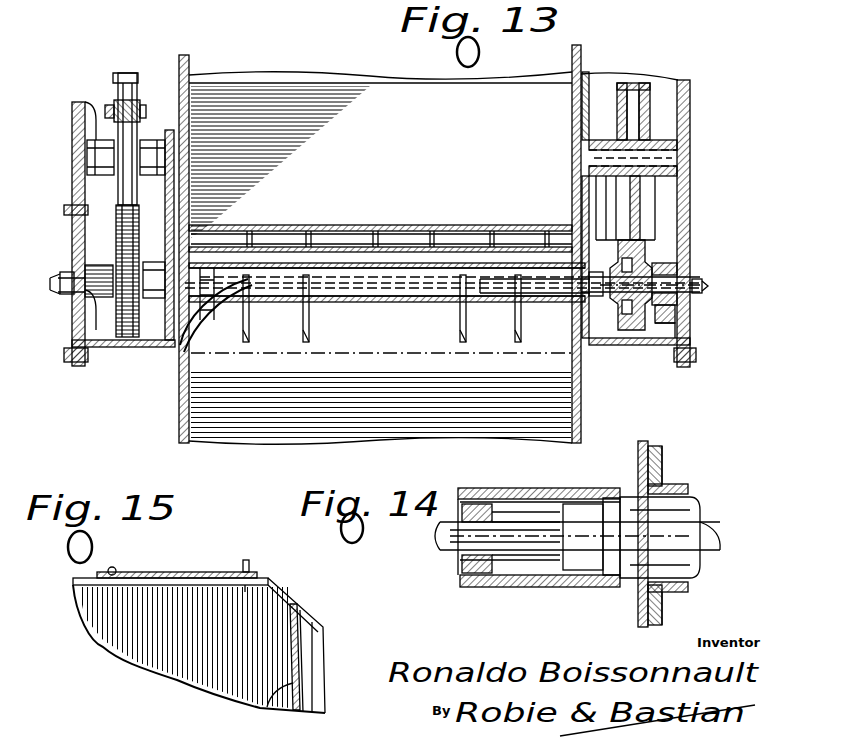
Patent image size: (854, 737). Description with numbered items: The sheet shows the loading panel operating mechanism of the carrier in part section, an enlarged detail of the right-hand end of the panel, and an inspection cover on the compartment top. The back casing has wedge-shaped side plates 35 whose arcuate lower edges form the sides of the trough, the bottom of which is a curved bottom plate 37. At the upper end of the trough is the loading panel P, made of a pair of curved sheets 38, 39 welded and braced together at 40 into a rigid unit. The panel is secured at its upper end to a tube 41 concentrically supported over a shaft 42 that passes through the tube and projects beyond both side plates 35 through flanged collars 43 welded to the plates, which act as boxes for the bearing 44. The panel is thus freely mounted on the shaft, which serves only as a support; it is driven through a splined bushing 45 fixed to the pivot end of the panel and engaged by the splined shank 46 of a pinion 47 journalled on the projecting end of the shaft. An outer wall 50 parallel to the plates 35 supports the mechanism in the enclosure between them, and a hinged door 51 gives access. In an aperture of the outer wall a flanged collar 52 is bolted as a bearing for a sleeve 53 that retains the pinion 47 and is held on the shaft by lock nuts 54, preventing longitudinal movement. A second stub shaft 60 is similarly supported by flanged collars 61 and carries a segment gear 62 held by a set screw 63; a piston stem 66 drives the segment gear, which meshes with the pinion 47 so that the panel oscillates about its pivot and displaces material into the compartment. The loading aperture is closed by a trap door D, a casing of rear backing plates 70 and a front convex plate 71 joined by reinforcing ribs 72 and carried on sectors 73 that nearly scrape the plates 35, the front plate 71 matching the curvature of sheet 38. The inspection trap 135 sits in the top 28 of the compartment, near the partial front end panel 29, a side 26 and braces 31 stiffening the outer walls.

In FIG. 13, the side plates 35 is at (182, 72).
In FIG. 14, the side plates 35 is at (644, 440).
In FIG. 13, the curved bottom plate 37 is at (255, 432).
In FIG. 13, the curved sheet 38 is at (216, 311).
In FIG. 13, the curved sheet 39 is at (250, 280).
In FIG. 14, the curved sheet 39 is at (465, 488).
In FIG. 13, the brace 40 is at (311, 322).
In FIG. 13, the tube 41 is at (420, 295).
In FIG. 14, the tube 41 is at (518, 488).
In FIG. 13, the shaft 42 is at (464, 300).
In FIG. 14, the shaft 42 is at (455, 552).
In FIG. 13, the flanged collars 43 is at (160, 242).
In FIG. 14, the flanged collars 43 is at (662, 452).
In FIG. 14, the bearing 44 is at (690, 486).
In FIG. 13, the splined bushing 45 is at (518, 300).
In FIG. 14, the splined bushing 45 is at (580, 504).
In FIG. 13, the splined shank 46 is at (606, 245).
In FIG. 14, the splined shank 46 is at (695, 510).
In FIG. 13, the pinion 47 is at (646, 275).
In FIG. 13, the outer wall 50 is at (82, 102).
In FIG. 13, the hinged door 51 is at (72, 180).
In FIG. 13, the flanged collar 52 is at (95, 268).
In FIG. 13, the sleeve 53 is at (690, 268).
In FIG. 13, the lock nuts 54 is at (60, 296).
In FIG. 13, the stub shaft 60 is at (589, 160).
In FIG. 13, the flanged collars 61 is at (87, 150).
In FIG. 13, the segment gear 62 is at (125, 172).
In FIG. 13, the set screw 63 is at (585, 116).
In FIG. 13, the piston stem 66 is at (108, 102).
In FIG. 13, the rear backing plates 70 is at (460, 232).
In FIG. 13, the front convex plate 71 is at (332, 232).
In FIG. 13, the reinforcing ribs 72 is at (402, 232).
In FIG. 13, the sectors 73 is at (210, 183).
In FIG. 13, the trap door D is at (283, 230).
In FIG. 13, the loading panel P is at (183, 370).
In FIG. 15, the inspection trap 135 is at (183, 572).
In FIG. 15, the top 28 is at (73, 580).
In FIG. 15, the partial front end panel 29 is at (185, 665).
In FIG. 15, the braces 31 is at (322, 632).
In FIG. 15, the side 26 is at (268, 705).